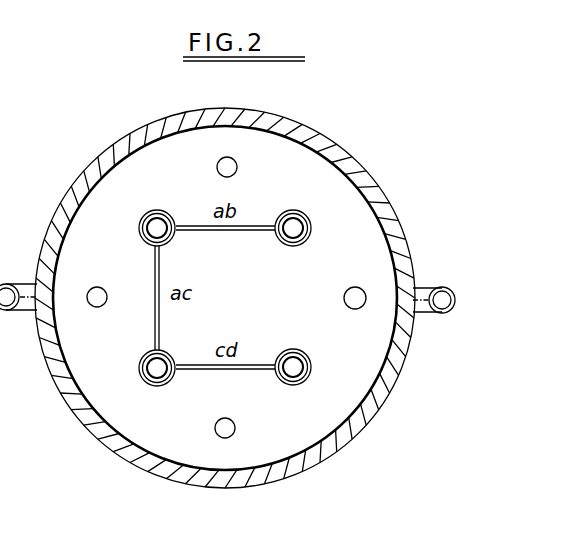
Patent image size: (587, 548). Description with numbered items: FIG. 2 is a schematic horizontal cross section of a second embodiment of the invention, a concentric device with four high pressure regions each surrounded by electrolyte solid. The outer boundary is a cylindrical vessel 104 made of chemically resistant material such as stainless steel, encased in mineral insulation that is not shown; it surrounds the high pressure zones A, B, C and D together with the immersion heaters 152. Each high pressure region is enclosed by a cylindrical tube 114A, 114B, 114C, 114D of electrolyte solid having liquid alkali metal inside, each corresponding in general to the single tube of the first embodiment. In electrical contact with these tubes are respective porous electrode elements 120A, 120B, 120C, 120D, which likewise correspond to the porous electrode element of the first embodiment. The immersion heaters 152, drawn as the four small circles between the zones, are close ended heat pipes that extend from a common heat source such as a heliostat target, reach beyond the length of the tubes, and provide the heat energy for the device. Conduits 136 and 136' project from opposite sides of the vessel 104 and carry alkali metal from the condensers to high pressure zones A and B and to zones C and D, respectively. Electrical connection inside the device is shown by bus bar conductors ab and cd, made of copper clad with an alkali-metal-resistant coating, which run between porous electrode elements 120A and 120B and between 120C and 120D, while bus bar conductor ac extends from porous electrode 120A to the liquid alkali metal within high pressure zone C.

The cylindrical vessel 104 is at (328, 453).
The cylindrical tube of electrolyte solid 114A is at (139, 233).
The cylindrical tube of electrolyte solid 114B is at (310, 240).
The cylindrical tube of electrolyte solid 114C is at (153, 386).
The cylindrical tube of electrolyte solid 114D is at (312, 369).
The porous electrode element 120A is at (167, 211).
The porous electrode element 120B is at (305, 213).
The porous electrode element 120C is at (144, 358).
The porous electrode element 120D is at (306, 353).
The immersion heaters 152 is at (240, 167).
The conduit 136 is at (19, 277).
The conduit 136' is at (439, 283).